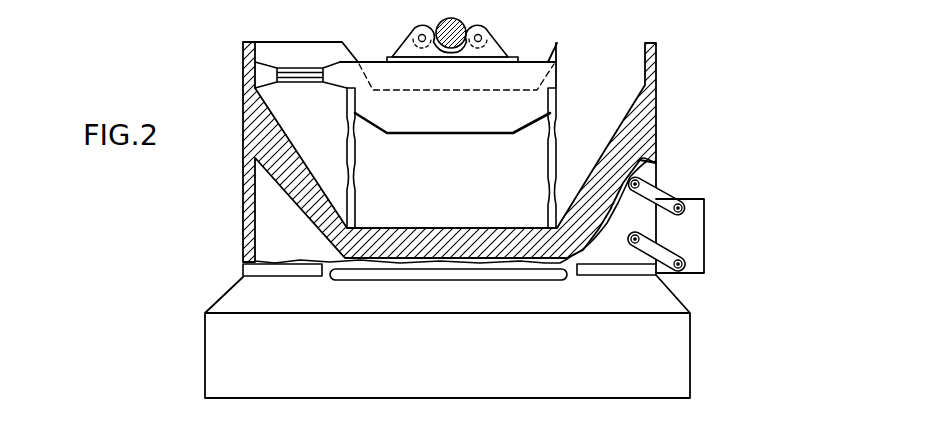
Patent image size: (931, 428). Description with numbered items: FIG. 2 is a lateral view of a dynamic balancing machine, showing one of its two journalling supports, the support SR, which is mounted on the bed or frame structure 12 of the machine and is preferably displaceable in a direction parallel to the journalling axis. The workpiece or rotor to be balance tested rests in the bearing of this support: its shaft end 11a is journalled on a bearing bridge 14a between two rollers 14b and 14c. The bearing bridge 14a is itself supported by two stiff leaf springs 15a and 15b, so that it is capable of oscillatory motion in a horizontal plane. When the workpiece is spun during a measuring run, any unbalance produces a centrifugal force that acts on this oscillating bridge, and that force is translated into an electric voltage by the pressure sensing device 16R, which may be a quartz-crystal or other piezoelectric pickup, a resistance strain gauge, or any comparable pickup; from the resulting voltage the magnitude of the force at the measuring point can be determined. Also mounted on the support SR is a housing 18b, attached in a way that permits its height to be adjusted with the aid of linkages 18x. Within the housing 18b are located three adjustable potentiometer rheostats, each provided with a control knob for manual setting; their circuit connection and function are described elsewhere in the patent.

The support SR is at (657, 55).
The pressure sensing device 16R is at (303, 72).
The bearing bridge 14a is at (468, 128).
The roller 14b is at (412, 28).
The roller 14c is at (490, 32).
The shaft end 11a is at (459, 23).
The leaf spring 15a is at (356, 167).
The leaf spring 15b is at (558, 150).
The linkages 18x is at (668, 193).
The housing 18b is at (698, 239).
The bed or frame structure 12 is at (688, 342).